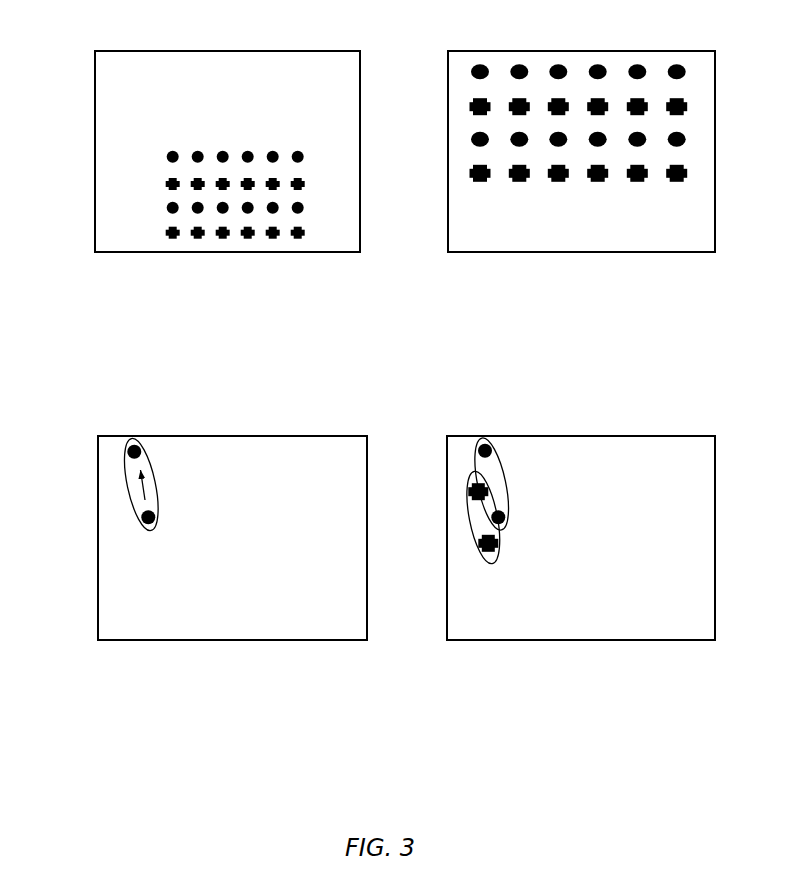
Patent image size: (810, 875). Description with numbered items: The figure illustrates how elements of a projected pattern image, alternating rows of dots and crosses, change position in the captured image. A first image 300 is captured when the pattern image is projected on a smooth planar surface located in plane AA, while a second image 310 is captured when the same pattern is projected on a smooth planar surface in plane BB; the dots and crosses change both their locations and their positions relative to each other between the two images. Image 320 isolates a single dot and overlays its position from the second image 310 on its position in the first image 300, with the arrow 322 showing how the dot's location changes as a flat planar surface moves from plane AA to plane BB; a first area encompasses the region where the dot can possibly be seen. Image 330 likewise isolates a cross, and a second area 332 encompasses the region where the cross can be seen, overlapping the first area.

The first image 300 is at (180, 252).
The second image 310 is at (513, 252).
The image 320 is at (170, 640).
The arrow 322 is at (138, 490).
The image 330 is at (518, 639).
The second area 332 is at (467, 512).